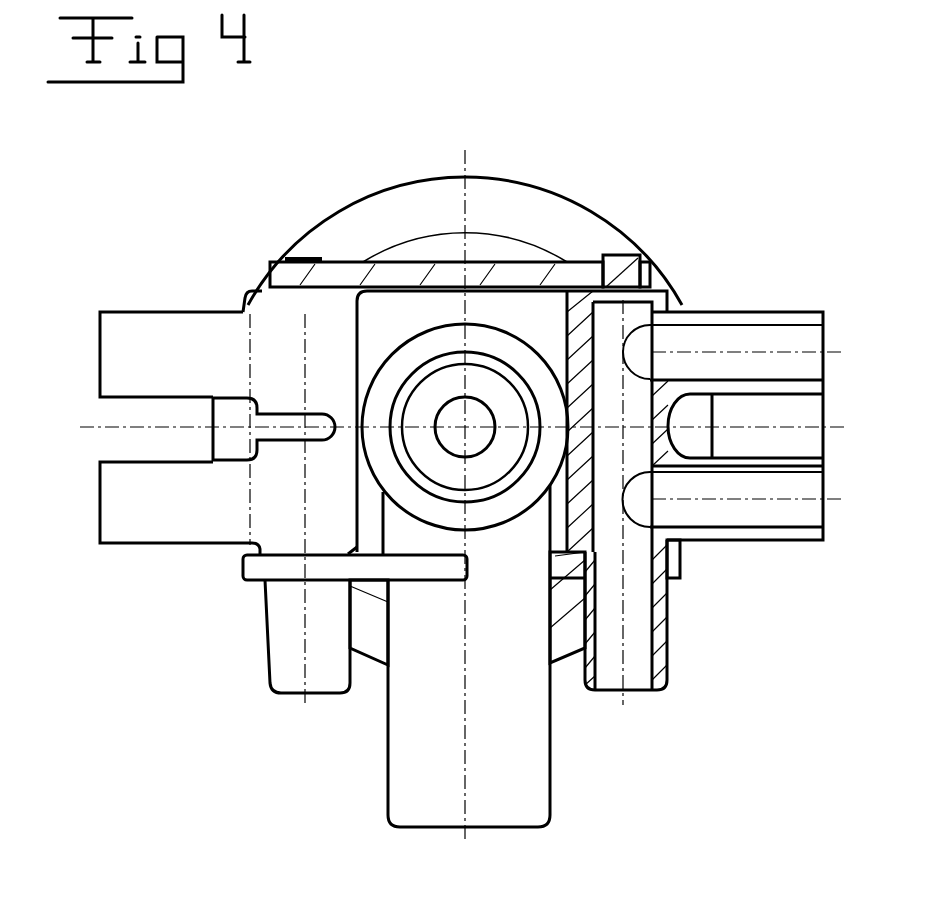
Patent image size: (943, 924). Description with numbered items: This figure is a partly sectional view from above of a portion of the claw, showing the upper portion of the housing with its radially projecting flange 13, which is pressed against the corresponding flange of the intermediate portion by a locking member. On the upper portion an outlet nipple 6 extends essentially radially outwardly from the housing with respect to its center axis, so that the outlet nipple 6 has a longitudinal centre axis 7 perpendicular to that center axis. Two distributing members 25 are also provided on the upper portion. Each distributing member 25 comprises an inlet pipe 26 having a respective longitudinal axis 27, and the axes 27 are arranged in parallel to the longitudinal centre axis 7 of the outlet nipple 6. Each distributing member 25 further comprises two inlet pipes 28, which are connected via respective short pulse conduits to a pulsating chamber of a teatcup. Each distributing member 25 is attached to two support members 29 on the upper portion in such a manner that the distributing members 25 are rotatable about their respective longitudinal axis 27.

The outlet nipple 6 is at (528, 757).
The longitudinal centre axis 7 is at (470, 790).
The radially projecting flange 13 is at (566, 236).
The distributing member 25 is at (720, 313).
The inlet pipe 26 is at (290, 647).
The longitudinal axis 27 is at (303, 692).
The inlet pipes 28 is at (130, 375).
The support member 29 is at (347, 258).